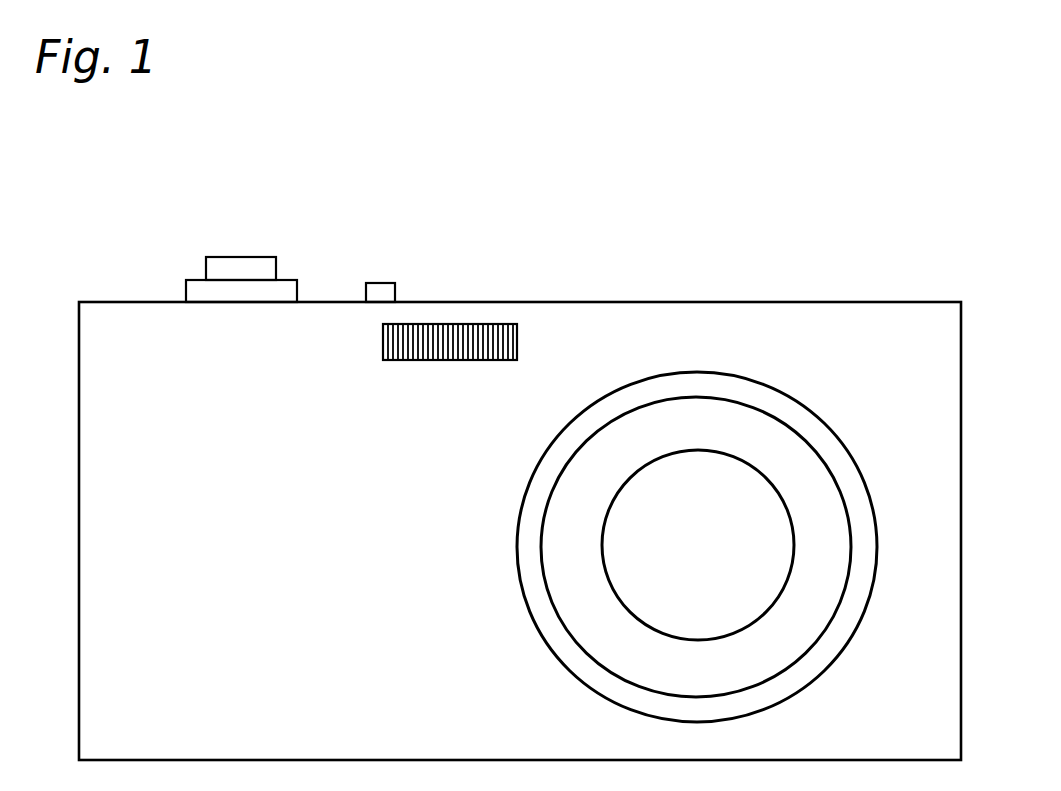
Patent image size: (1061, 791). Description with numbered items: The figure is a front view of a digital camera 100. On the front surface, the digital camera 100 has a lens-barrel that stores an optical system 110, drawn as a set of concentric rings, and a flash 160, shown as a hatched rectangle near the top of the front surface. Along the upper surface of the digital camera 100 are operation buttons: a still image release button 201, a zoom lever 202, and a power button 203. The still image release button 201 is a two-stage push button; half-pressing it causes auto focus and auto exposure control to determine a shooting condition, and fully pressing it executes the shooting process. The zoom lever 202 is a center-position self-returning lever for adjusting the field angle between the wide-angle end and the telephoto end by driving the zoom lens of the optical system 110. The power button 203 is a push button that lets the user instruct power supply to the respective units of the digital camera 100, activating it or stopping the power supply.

The digital camera 100 is at (801, 184).
The optical system 110 is at (747, 565).
The flash 160 is at (460, 345).
The still image release button 201 is at (228, 268).
The zoom lever 202 is at (284, 288).
The power button 203 is at (383, 290).